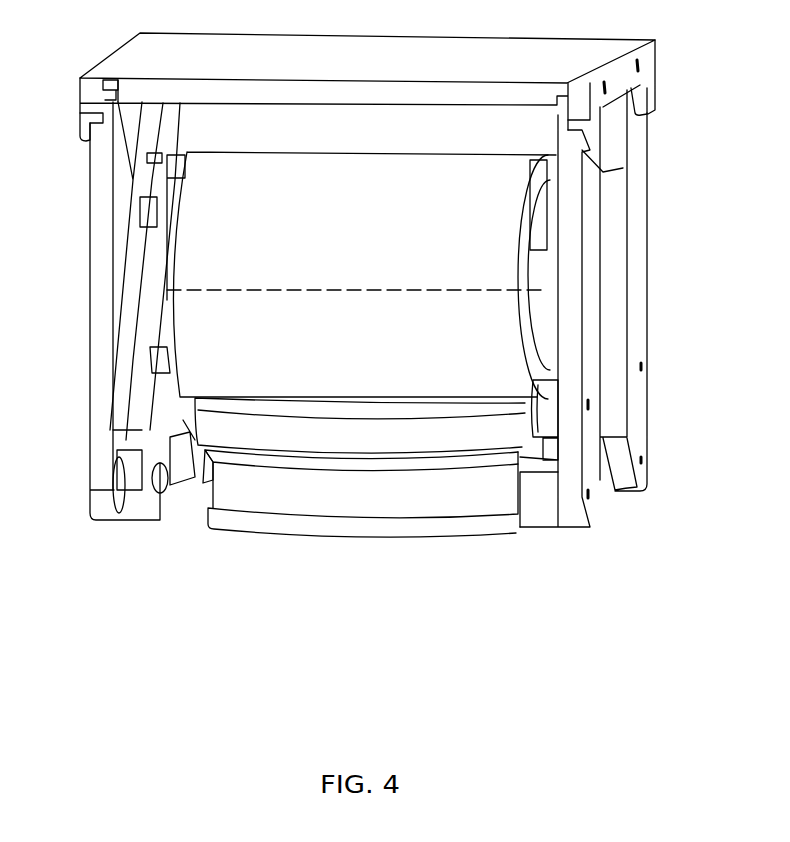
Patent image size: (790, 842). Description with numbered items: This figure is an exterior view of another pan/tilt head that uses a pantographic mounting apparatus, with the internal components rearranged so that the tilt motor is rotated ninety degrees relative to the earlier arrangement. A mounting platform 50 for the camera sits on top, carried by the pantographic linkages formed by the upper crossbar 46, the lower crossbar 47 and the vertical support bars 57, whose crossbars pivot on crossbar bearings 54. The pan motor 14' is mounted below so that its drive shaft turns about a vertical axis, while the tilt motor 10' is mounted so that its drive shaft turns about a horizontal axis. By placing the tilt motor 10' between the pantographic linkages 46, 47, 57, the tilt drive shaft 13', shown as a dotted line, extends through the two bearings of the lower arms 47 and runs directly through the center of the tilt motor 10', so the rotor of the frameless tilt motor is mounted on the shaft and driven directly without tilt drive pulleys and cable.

The mounting platform 50 is at (367, 81).
The vertical support bars 57 is at (125, 227).
The upper crossbar 46 is at (148, 335).
The crossbar bearings 54 is at (146, 487).
The lower crossbar 47 is at (197, 440).
The tilt motor 10' is at (362, 306).
The tilt drive shaft 13' is at (356, 318).
The pan motor 14' is at (376, 467).